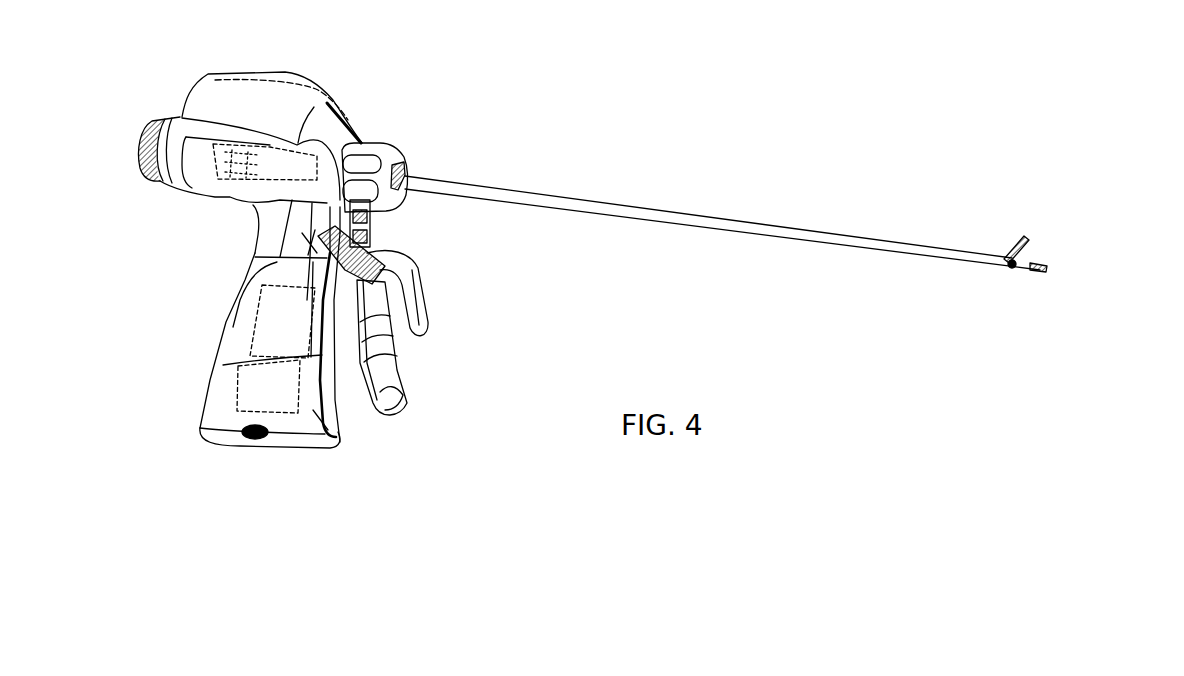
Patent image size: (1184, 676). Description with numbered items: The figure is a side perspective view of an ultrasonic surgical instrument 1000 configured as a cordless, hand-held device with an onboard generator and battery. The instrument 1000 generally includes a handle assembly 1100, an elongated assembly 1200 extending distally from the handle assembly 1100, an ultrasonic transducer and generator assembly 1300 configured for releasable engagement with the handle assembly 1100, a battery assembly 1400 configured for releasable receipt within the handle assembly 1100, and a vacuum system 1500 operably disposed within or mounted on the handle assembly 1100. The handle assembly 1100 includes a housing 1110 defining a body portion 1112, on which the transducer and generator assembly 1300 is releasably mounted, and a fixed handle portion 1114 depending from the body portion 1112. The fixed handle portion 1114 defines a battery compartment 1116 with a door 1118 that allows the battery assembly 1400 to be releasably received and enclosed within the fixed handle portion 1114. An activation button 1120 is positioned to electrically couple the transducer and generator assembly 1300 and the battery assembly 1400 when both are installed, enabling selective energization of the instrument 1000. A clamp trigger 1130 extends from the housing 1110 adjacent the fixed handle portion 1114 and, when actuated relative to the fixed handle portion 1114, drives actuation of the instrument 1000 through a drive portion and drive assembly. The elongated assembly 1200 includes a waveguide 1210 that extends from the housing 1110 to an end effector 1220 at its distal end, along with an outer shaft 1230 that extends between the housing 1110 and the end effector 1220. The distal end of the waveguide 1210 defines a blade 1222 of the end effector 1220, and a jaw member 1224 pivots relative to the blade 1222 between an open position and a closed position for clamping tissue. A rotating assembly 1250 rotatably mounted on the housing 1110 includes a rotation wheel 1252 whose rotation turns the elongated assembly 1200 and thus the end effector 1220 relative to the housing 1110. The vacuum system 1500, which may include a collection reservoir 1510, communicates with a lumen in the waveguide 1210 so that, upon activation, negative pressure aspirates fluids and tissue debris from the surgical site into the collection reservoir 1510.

The ultrasonic surgical instrument 1000 is at (686, 122).
The handle assembly 1100 is at (290, 45).
The housing 1110 is at (350, 118).
The body portion 1112 is at (310, 132).
The fixed handle portion 1114 is at (240, 278).
The battery compartment 1116 is at (338, 447).
The door 1118 is at (270, 452).
The activation button 1120 is at (372, 230).
The clamp trigger 1130 is at (390, 393).
The elongated assembly 1200 is at (666, 186).
The waveguide 1210 is at (1023, 273).
The end effector 1220 is at (1073, 228).
The blade 1222 is at (1047, 269).
The jaw member 1224 is at (1028, 242).
The outer shaft 1230 is at (593, 214).
The rotating assembly 1250 is at (432, 142).
The rotation wheel 1252 is at (407, 155).
The ultrasonic transducer and generator assembly 1300 is at (176, 88).
The battery assembly 1400 is at (223, 383).
The vacuum system 1500 is at (207, 196).
The collection reservoir 1510 is at (222, 201).